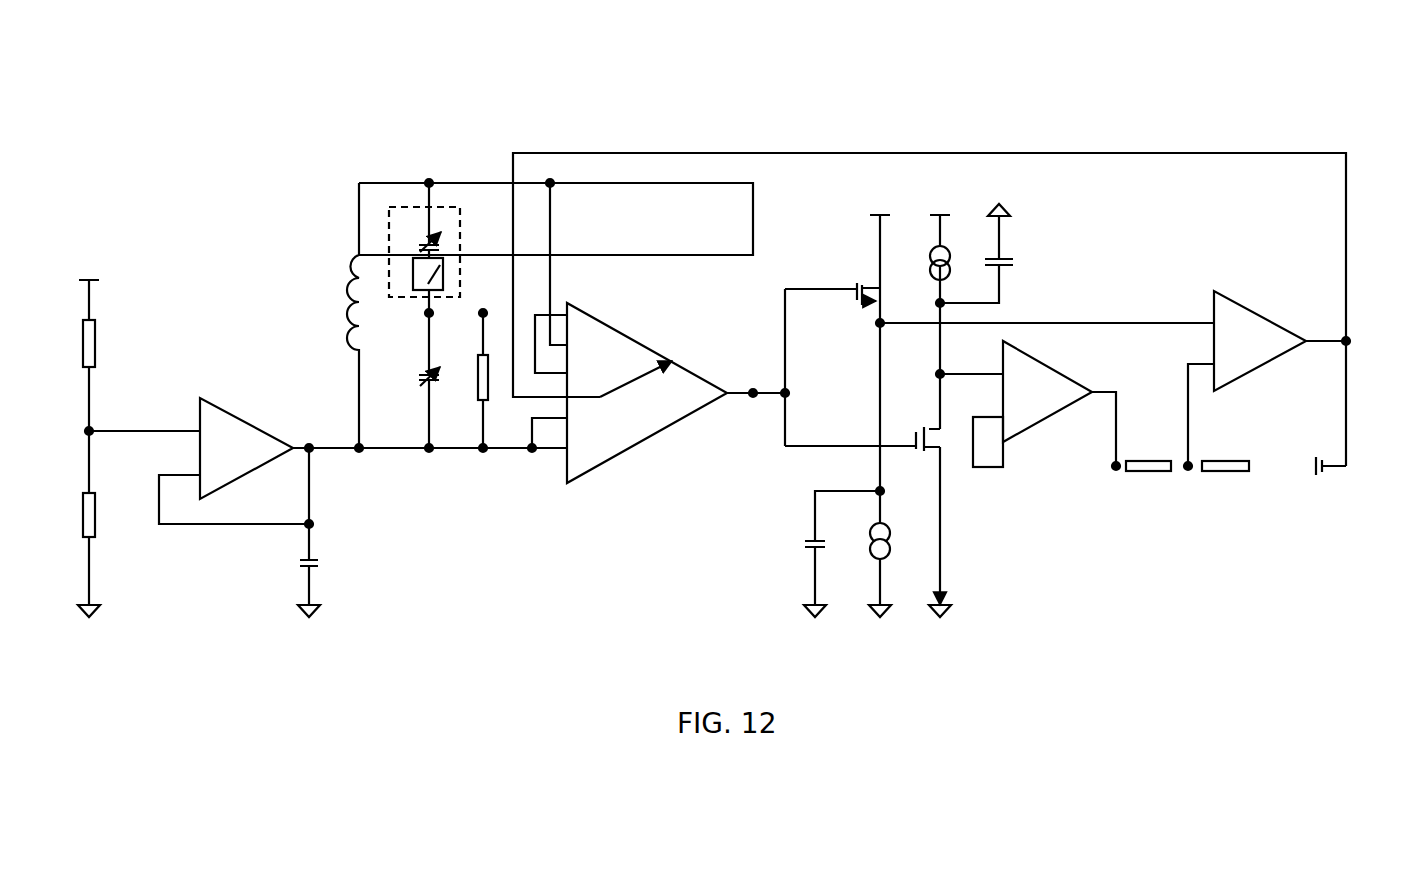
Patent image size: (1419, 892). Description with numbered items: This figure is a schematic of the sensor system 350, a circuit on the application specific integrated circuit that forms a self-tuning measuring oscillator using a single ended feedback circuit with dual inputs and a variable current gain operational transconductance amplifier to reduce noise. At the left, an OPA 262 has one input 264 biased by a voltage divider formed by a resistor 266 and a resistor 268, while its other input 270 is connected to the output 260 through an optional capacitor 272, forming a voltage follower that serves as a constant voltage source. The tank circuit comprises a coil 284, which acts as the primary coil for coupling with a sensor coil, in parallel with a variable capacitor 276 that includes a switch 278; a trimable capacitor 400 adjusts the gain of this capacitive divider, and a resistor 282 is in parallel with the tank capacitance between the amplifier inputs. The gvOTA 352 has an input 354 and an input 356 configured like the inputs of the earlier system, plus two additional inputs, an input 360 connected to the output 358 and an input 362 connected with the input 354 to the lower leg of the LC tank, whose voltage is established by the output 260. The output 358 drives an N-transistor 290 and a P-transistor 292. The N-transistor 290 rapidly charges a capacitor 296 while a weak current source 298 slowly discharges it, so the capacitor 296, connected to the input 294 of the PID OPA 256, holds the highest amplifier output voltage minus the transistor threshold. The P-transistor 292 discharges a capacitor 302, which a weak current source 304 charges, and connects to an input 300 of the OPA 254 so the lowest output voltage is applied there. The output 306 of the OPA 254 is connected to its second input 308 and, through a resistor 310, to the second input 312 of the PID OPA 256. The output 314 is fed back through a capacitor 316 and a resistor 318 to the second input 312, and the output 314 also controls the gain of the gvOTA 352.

The sensor system 350 is at (1160, 100).
The resistor 266 is at (95, 338).
The resistor 268 is at (95, 530).
The input of the OPA 264 is at (200, 428).
The OPA 262 is at (237, 412).
The other input of the OPA 270 is at (200, 475).
The output of the OPA 260 is at (295, 447).
The capacitor 272 is at (300, 565).
The coil 284 is at (348, 268).
The variable capacitor 276 is at (408, 207).
The switch 278 is at (413, 268).
The capacitor 400 is at (425, 386).
The resistor 282 is at (483, 400).
The gvOTA 352 is at (628, 333).
The input 360 is at (567, 345).
The input 356 is at (573, 372).
The input 362 is at (567, 422).
The input 354 is at (567, 450).
The output of the gvOTA 358 is at (728, 391).
The N-transistor 290 is at (850, 288).
The weak current source 304 is at (940, 247).
The capacitor 302 is at (1004, 260).
The input of the OPA 300 is at (1000, 373).
The second input of the OPA 308 is at (1000, 417).
The P-transistor 292 is at (936, 448).
The capacitor 296 is at (815, 538).
The weak current source 298 is at (876, 560).
The OPA 254 is at (1060, 372).
The output of the OPA 306 is at (1097, 397).
The resistor 310 is at (1145, 472).
The resistor 318 is at (1224, 472).
The second input of the PID OPA 312 is at (1214, 364).
The input of the PID OPA 294 is at (1212, 322).
The PID OPA 256 is at (1240, 303).
The output of the PID OPA 314 is at (1306, 340).
The capacitor 316 is at (1325, 470).